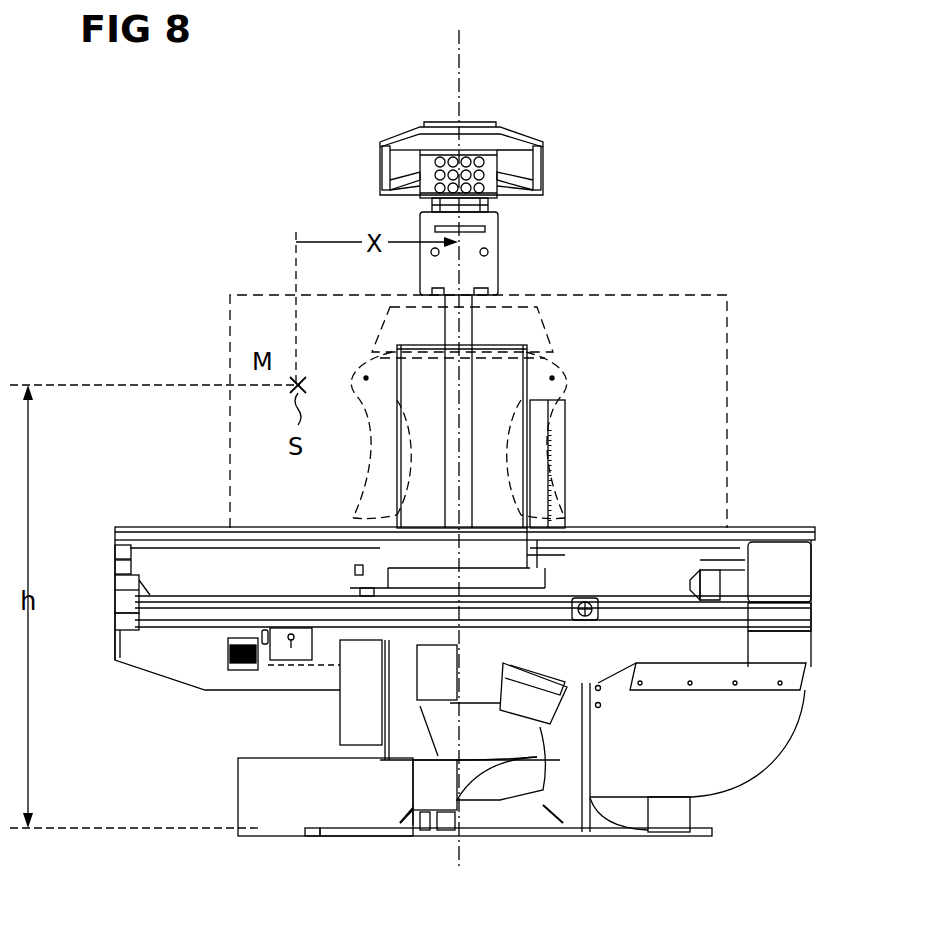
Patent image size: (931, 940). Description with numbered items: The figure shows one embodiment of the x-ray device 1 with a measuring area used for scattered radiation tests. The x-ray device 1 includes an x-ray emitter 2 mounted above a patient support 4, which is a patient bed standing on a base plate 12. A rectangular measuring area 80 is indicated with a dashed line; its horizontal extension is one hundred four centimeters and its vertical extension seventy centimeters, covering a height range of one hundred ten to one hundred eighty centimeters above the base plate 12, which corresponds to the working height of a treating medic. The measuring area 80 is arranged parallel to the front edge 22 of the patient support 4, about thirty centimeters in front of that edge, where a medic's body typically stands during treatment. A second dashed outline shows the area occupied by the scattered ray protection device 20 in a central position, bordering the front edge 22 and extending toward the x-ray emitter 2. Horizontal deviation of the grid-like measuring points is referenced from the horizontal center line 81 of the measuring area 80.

The x-ray device 1 is at (226, 160).
The x-ray emitter 2 is at (521, 134).
The patient support 4 is at (768, 527).
The base plate 12 is at (660, 837).
The scattered ray protection device 20 is at (560, 356).
The front edge 22 is at (163, 536).
The measuring area 80 is at (728, 332).
The horizontal center line 81 is at (462, 57).